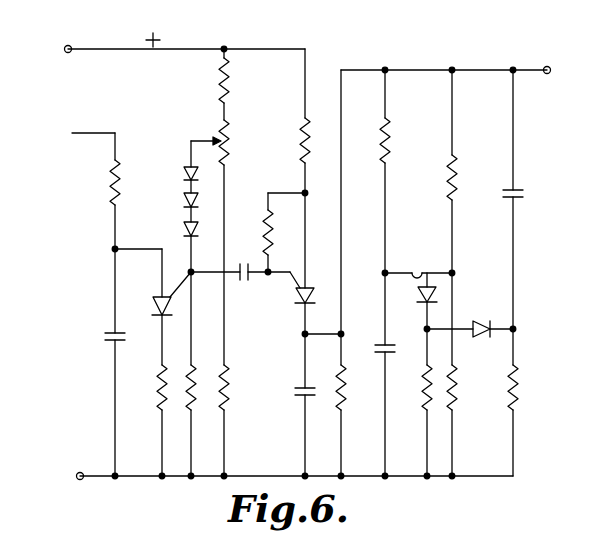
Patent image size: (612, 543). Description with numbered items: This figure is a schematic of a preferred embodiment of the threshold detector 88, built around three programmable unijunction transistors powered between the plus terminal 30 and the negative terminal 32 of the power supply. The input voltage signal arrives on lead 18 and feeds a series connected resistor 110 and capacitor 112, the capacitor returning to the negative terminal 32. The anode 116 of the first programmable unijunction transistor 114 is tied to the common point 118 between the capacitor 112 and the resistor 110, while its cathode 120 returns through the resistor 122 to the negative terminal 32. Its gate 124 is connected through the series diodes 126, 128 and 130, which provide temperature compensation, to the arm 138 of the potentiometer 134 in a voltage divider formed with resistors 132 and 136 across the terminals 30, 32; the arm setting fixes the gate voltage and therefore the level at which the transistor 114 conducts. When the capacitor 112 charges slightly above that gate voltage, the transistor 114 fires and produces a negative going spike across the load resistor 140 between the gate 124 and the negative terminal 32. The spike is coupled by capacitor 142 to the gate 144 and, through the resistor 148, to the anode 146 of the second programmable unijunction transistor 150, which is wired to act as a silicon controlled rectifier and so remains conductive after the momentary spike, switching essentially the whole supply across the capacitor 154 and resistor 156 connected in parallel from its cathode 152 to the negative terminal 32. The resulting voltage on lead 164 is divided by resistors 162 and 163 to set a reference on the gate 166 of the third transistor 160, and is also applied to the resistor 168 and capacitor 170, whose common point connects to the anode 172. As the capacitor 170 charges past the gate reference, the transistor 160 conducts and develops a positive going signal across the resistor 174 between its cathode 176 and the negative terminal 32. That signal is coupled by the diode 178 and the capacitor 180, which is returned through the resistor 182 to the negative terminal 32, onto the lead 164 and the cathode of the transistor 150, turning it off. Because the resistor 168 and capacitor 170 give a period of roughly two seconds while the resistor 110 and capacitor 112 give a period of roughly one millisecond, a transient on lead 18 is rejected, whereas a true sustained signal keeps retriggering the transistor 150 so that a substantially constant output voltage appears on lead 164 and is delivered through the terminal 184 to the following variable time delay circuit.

The lead 18 is at (103, 118).
The plus terminal 30 is at (79, 42).
The negative terminal 32 is at (92, 463).
The threshold detector 88 is at (357, 43).
The resistor 110 is at (119, 176).
The capacitor 112 is at (104, 337).
The programmable unijunction transistor 114 is at (155, 306).
The anode 116 is at (160, 272).
The common point 118 is at (113, 248).
The cathode 120 is at (160, 335).
The resistor 122 is at (158, 386).
The gate 124 is at (181, 285).
The diode 126 is at (184, 173).
The diode 128 is at (184, 201).
The diode 130 is at (184, 229).
The resistor 132 is at (220, 76).
The potentiometer 134 is at (228, 134).
The resistor 136 is at (226, 379).
The arm 138 is at (204, 131).
The load resistor 140 is at (190, 409).
The capacitor 142 is at (250, 248).
The gate 144 is at (293, 260).
The anode 146 is at (307, 278).
The resistor 148 is at (262, 222).
The programmable unijunction transistor 150 is at (294, 298).
The cathode 152 is at (300, 325).
The capacitor 154 is at (288, 398).
The resistor 156 is at (343, 396).
The programmable unijunction transistor 160 is at (420, 298).
The resistor 162 is at (450, 176).
The resistor 163 is at (455, 399).
The lead 164 is at (304, 136).
The gate 166 is at (427, 276).
The resistor 168 is at (390, 126).
The capacitor 170 is at (380, 349).
The anode 172 is at (417, 264).
The resistor 174 is at (425, 408).
The cathode 176 is at (432, 315).
The diode 178 is at (481, 321).
The capacitor 180 is at (508, 195).
The resistor 182 is at (517, 396).
The terminal 184 is at (549, 61).